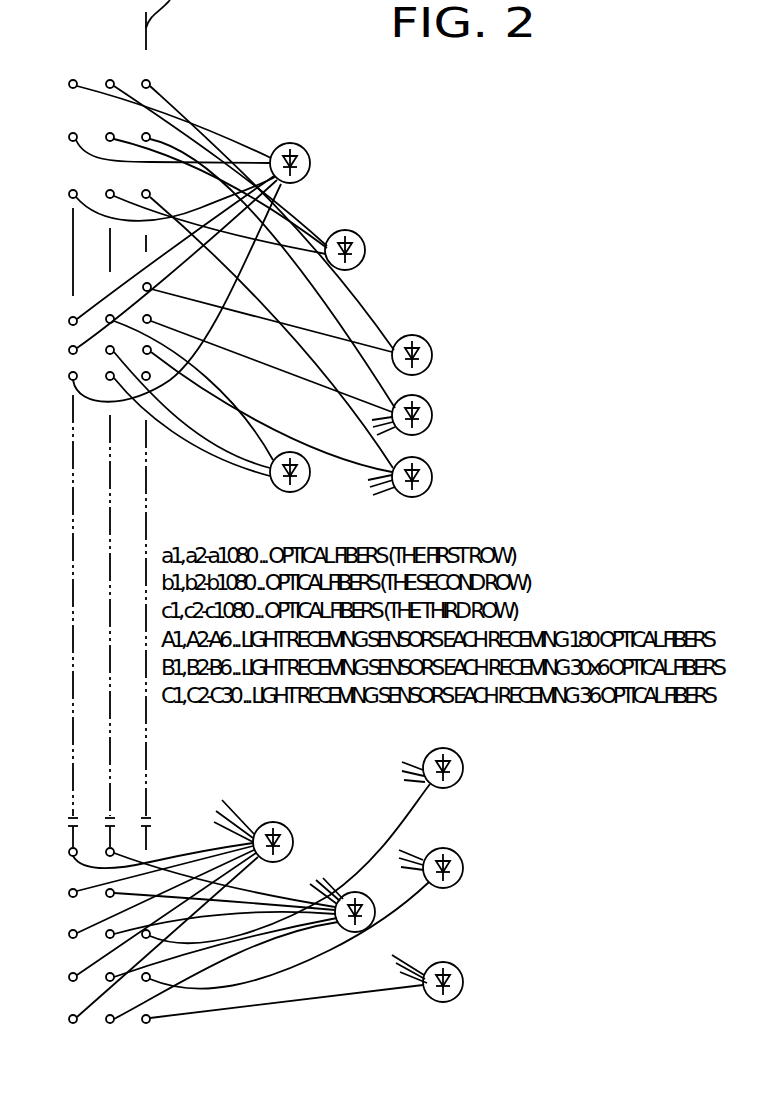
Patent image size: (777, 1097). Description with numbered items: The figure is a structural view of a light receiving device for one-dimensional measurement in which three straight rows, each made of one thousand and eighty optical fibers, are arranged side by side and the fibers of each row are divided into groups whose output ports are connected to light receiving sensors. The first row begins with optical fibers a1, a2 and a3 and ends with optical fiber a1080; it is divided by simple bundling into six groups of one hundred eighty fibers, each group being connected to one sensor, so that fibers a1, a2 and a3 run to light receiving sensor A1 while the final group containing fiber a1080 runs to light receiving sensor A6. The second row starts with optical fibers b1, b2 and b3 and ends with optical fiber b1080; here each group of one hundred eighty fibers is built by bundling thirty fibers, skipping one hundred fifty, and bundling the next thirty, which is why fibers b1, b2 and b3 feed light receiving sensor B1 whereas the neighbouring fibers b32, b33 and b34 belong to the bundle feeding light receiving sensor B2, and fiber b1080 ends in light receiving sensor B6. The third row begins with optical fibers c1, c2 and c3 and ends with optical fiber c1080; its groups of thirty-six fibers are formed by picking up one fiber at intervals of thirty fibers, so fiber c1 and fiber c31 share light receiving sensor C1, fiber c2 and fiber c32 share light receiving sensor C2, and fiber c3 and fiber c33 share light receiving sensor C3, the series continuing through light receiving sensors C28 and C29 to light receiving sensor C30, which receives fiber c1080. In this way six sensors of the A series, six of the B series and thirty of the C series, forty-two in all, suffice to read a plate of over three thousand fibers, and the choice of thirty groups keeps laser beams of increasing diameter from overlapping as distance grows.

The optical fiber of the first row a1 is at (168, 105).
The optical fiber of the second row b1 is at (214, 149).
The optical fiber of the third row c1 is at (266, 201).
The optical fiber of the first row a2 is at (167, 136).
The optical fiber of the second row b2 is at (214, 178).
The optical fiber of the third row c2 is at (266, 258).
The optical fiber of the first row a3 is at (170, 194).
The optical fiber of the second row b3 is at (214, 210).
The optical fiber of the third row c3 is at (265, 317).
The optical fiber of the third row c31 is at (147, 283).
The optical fiber of the third row c32 is at (147, 315).
The optical fiber of the third row c33 is at (149, 354).
The optical fiber of the second row b32 is at (108, 322).
The optical fiber of the second row b33 is at (109, 354).
The optical fiber of the second row b34 is at (109, 380).
The light receiving sensor A1 is at (300, 163).
The light receiving sensor B1 is at (355, 250).
The light receiving sensor B2 is at (302, 472).
The light receiving sensor C1 is at (423, 355).
The light receiving sensor C2 is at (413, 415).
The light receiving sensor C3 is at (411, 477).
The light receiving sensor A6 is at (259, 830).
The light receiving sensor B6 is at (353, 905).
The light receiving sensor C28 is at (449, 768).
The light receiving sensor C29 is at (447, 868).
The light receiving sensor C30 is at (444, 978).
The optical fiber of the first row a1080 is at (147, 953).
The optical fiber of the second row b1080 is at (213, 985).
The optical fiber of the third row c1080 is at (281, 1017).